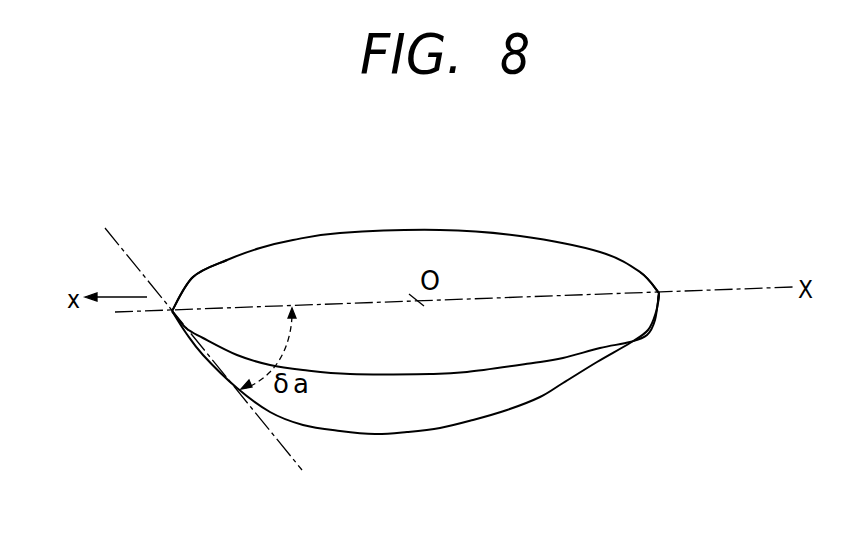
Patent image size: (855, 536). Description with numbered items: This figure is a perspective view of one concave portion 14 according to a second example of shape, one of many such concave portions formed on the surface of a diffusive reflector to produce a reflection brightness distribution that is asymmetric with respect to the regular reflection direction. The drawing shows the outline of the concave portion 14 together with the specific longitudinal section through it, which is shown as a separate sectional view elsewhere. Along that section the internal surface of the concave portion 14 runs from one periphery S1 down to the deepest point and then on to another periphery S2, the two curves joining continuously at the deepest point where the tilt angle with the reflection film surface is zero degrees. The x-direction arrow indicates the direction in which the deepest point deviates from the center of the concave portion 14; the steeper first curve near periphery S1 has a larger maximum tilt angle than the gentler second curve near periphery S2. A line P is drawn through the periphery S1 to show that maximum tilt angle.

The concave portion 14 is at (313, 247).
The periphery of the concave portion S1 is at (172, 311).
The another periphery of the concave portion S2 is at (659, 293).
The plane tangent to lens tip P is at (108, 222).